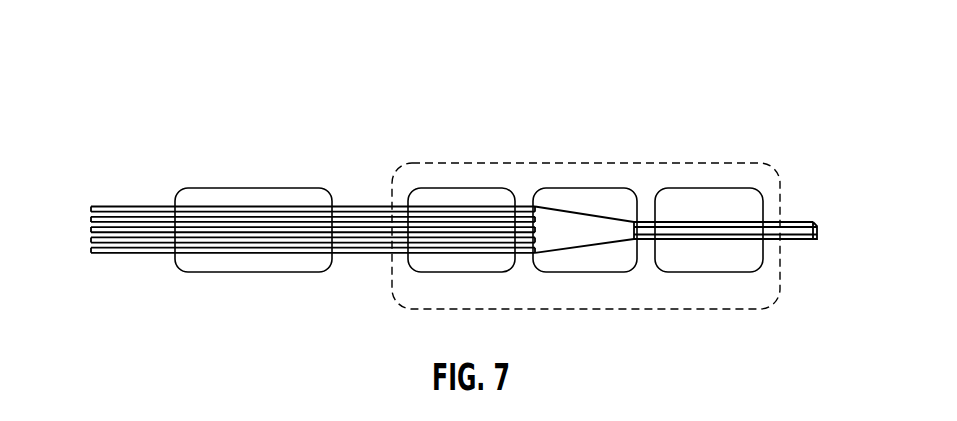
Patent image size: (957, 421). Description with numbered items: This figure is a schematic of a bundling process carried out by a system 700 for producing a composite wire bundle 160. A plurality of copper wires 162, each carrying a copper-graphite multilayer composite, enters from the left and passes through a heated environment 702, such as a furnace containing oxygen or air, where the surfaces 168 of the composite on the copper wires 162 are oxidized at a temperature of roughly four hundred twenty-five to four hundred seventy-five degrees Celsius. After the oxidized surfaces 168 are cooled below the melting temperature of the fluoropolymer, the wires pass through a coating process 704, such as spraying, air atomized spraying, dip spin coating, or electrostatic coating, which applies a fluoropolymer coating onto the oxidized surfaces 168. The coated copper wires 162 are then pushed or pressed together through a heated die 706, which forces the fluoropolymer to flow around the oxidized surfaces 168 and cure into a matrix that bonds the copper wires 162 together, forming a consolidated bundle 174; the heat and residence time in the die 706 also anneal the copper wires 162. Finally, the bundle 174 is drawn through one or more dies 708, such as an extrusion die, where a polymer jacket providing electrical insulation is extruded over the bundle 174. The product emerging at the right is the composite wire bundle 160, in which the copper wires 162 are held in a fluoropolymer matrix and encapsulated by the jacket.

The system 700 is at (146, 55).
The copper wires 162 is at (310, 180).
The surfaces 168 is at (161, 209).
The heated environment 702 is at (252, 187).
The processes 704 is at (453, 188).
The heated die 706 is at (605, 188).
The dies 708 is at (735, 188).
The bundle 174 is at (643, 222).
The composite wire bundle 160 is at (800, 220).